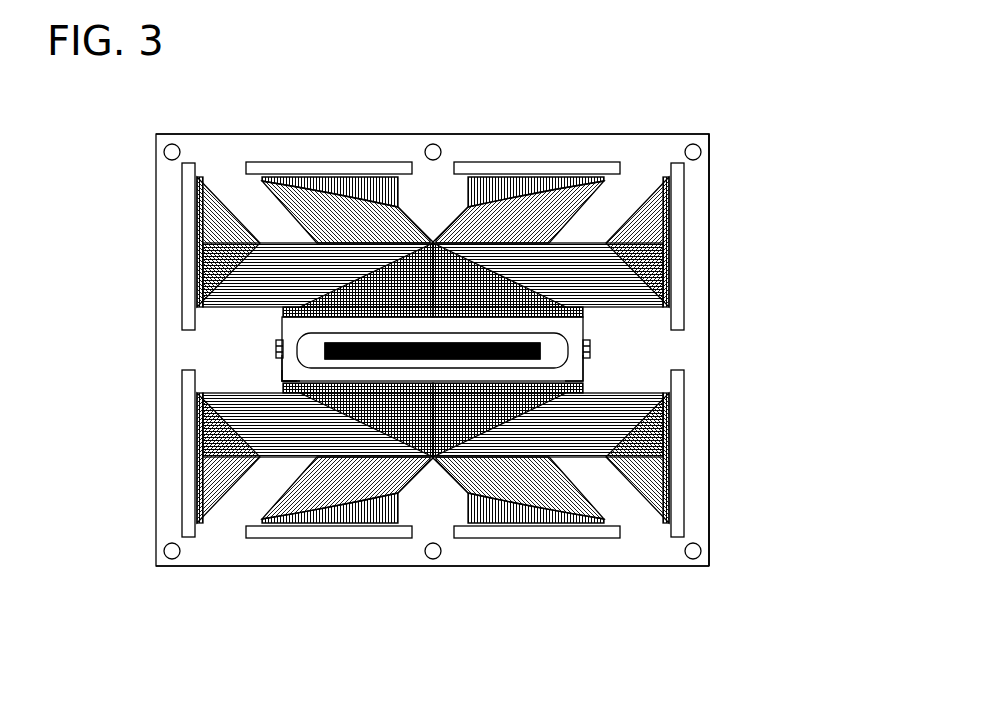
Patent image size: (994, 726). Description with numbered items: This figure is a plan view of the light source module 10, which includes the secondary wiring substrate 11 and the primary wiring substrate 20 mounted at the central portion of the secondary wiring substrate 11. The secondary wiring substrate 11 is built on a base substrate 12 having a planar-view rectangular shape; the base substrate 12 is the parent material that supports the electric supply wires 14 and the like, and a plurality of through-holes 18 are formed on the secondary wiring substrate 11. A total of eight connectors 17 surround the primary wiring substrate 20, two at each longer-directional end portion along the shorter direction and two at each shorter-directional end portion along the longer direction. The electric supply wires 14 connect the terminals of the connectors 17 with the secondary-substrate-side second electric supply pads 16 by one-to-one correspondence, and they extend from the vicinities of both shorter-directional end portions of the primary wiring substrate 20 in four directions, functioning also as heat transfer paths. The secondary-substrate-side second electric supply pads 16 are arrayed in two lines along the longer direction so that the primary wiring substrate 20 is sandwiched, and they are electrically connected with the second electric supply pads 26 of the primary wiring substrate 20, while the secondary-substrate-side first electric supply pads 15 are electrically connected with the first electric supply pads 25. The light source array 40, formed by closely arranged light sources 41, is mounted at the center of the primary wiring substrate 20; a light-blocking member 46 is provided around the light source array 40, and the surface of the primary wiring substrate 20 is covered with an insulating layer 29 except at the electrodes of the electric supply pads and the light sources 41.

The light source module 10 is at (720, 66).
The secondary wiring substrate 11 is at (710, 136).
The base substrate 12 is at (700, 210).
The electric supply wires 14 is at (223, 205).
The secondary-substrate-side first electric supply pads 15 is at (276, 347).
The secondary-substrate-side second electric supply pads 16 is at (436, 240).
The connectors 17 is at (195, 198).
The through-holes 18 is at (700, 568).
The primary wiring substrate 20 is at (586, 326).
The first electric supply pads 25 is at (283, 360).
The second electric supply pads 26 is at (430, 240).
The insulating layer 29 is at (283, 378).
The light source array 40 is at (515, 342).
The light sources 41 is at (432, 351).
The light-blocking member 46 is at (313, 360).